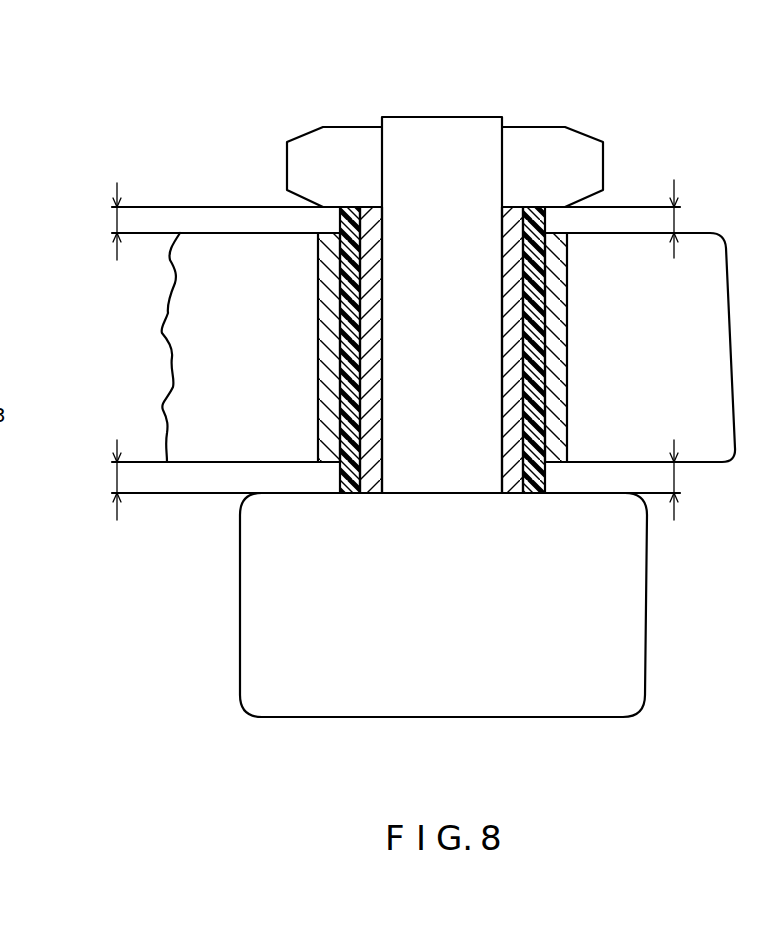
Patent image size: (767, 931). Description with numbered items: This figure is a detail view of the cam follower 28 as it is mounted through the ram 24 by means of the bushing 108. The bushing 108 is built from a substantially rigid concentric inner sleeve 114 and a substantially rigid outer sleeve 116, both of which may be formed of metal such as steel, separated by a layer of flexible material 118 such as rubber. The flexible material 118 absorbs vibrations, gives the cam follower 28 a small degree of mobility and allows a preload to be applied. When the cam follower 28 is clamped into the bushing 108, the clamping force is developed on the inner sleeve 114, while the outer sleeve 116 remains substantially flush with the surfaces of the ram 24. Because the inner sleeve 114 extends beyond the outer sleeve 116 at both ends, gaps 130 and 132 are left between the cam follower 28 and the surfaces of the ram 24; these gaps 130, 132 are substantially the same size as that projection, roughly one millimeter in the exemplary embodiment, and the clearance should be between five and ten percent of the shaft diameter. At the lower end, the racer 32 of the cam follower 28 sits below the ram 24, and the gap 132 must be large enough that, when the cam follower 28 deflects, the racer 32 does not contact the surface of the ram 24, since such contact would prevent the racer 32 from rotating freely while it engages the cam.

The cam follower 28 is at (468, 117).
The bushing 108 is at (340, 233).
The inner sleeve 114 is at (510, 215).
The flexible material 118 is at (537, 210).
The outer sleeve 116 is at (558, 233).
The ram 24 is at (160, 333).
The racer 32 is at (647, 606).
The gap 130 is at (113, 222).
The gap 132 is at (113, 470).